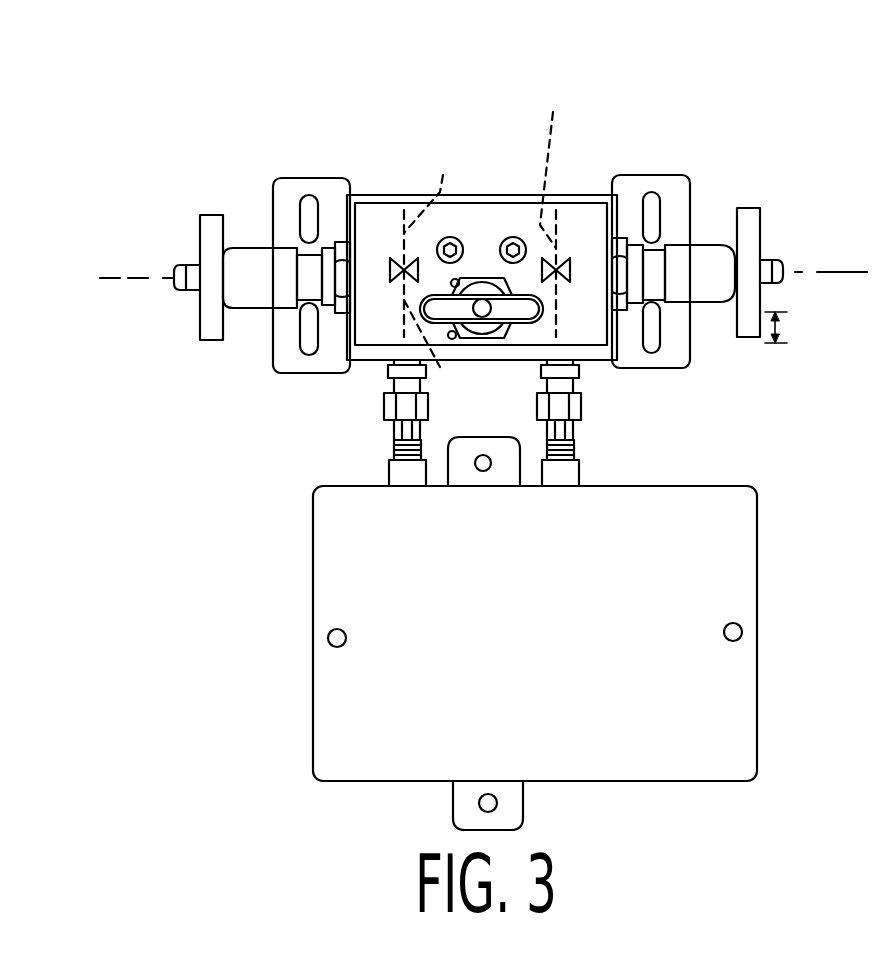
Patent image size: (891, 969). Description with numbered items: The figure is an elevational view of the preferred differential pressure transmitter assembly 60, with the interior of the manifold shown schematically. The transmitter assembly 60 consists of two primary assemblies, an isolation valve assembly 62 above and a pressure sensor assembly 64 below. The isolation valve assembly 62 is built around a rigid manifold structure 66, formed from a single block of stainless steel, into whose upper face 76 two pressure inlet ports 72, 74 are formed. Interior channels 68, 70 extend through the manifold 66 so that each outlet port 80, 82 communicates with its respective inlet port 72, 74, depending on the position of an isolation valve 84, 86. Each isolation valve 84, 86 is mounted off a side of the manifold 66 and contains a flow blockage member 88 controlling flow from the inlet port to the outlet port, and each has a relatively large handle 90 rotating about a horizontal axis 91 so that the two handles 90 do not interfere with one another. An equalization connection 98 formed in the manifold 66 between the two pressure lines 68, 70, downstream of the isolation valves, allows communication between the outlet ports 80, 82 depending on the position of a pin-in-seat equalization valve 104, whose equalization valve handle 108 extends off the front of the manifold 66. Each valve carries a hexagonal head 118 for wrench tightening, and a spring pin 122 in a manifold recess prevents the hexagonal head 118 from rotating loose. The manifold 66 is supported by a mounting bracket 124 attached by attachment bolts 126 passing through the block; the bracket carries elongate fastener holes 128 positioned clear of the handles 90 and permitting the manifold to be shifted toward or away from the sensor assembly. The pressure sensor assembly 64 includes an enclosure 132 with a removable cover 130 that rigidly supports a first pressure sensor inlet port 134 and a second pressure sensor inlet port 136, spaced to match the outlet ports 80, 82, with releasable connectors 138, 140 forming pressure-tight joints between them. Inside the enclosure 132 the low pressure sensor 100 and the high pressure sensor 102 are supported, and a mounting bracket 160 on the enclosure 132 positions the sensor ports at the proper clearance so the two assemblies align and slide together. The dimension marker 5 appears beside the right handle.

The differential pressure transmitter assembly 60 is at (240, 128).
The isolation valve assembly 62 is at (393, 170).
The pressure sensor assembly 64 is at (288, 600).
The rigid manifold structure 66 is at (583, 215).
The interior channel 68 is at (433, 193).
The interior channel 70 is at (556, 166).
The pressure inlet port 72 is at (408, 195).
The pressure inlet port 74 is at (557, 215).
The upper face 76 is at (598, 212).
The outlet port 80 is at (388, 378).
The outlet port 82 is at (576, 378).
The isolation valve 84 is at (252, 304).
The isolation valve 86 is at (699, 305).
The flow blockage member 88 is at (402, 266).
The handle 90 is at (200, 222).
The horizontal axis 91 is at (833, 272).
The offset dimension 5 is at (782, 328).
The equalization connection 98 is at (433, 344).
The pressure sensor 100 is at (389, 476).
The pressure sensor 102 is at (579, 476).
The equalization valve 104 is at (490, 330).
The equalization valve handle 108 is at (457, 313).
The hexagonal head 118 is at (338, 312).
The spring pin 122 is at (627, 302).
The mounting bracket 124 is at (663, 217).
The attachment bolts 126 is at (458, 237).
The elongate fastener holes 128 is at (300, 210).
The removable cover 130 is at (748, 700).
The enclosure 132 is at (754, 508).
The first pressure sensor inlet port 134 is at (391, 455).
The second pressure sensor inlet port 136 is at (576, 456).
The releasable connector 138 is at (384, 408).
The releasable connector 140 is at (582, 405).
The mounting bracket 160 is at (512, 790).